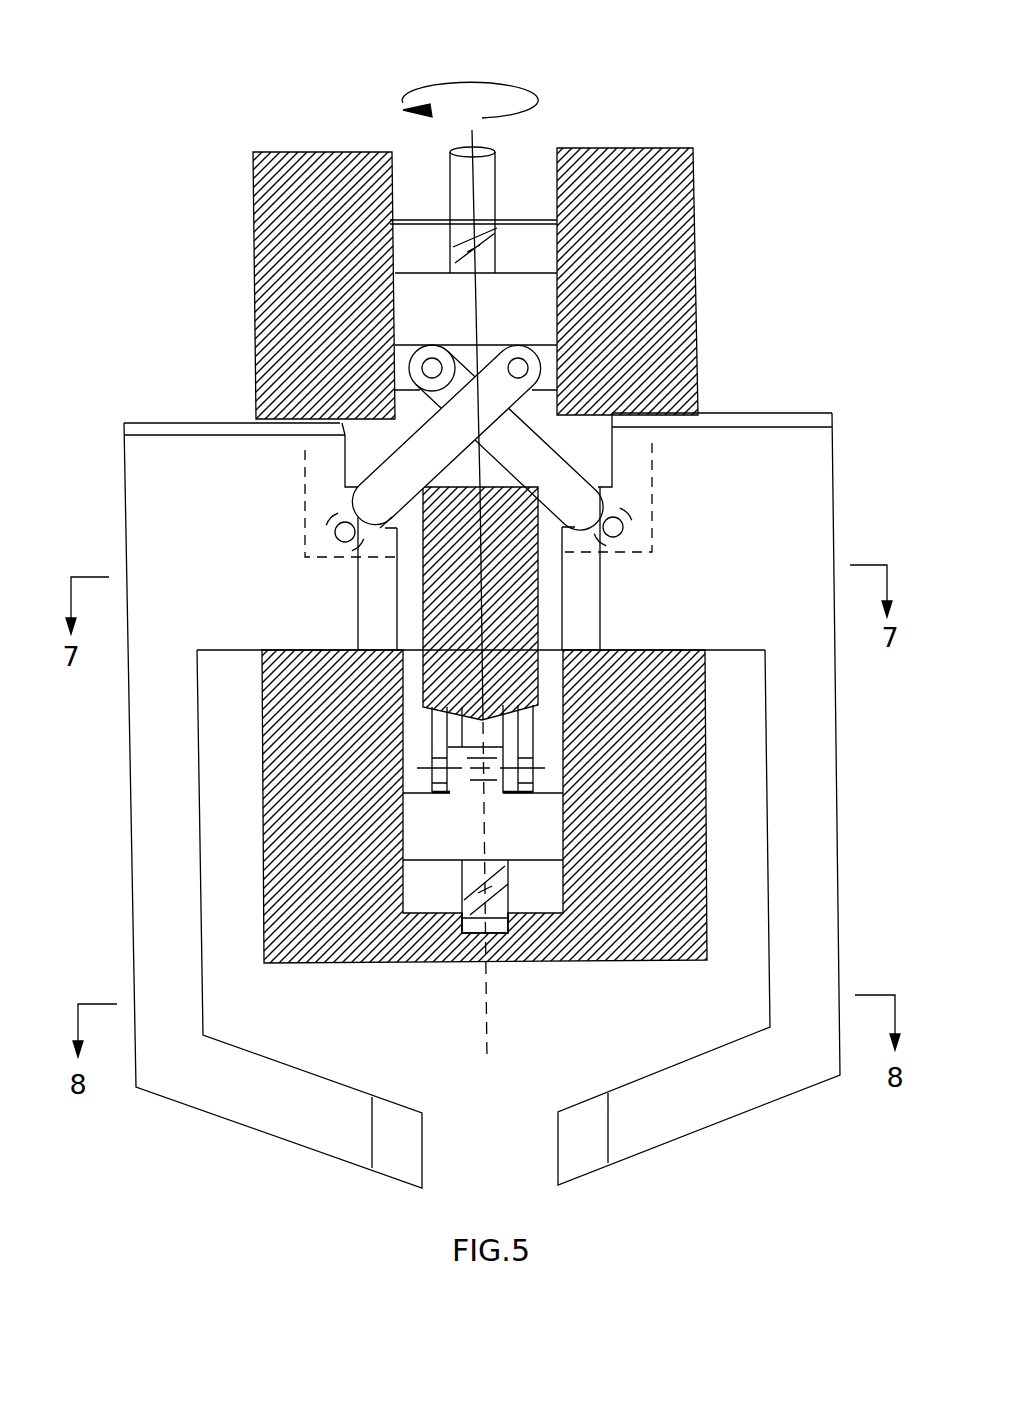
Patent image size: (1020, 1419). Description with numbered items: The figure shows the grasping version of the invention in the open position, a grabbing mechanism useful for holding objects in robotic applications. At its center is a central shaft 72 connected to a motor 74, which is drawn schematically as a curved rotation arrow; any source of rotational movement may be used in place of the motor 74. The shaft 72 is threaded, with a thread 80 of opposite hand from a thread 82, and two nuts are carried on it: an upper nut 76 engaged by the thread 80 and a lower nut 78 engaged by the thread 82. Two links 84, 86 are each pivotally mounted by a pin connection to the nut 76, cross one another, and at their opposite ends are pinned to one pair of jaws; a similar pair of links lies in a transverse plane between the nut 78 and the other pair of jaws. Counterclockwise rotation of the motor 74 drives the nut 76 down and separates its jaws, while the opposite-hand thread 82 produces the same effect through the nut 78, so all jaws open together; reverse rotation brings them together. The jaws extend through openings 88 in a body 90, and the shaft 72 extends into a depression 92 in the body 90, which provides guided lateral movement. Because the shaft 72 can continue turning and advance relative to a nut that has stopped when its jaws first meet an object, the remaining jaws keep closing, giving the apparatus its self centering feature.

The central shaft 72 is at (495, 182).
The motor 74 is at (413, 90).
The nut 76 is at (560, 323).
The nut 78 is at (567, 828).
The thread 80 is at (450, 252).
The thread 82 is at (508, 897).
The link 84 is at (580, 468).
The link 86 is at (388, 458).
The openings 88 is at (280, 650).
The body 90 is at (693, 202).
The depression 92 is at (464, 937).